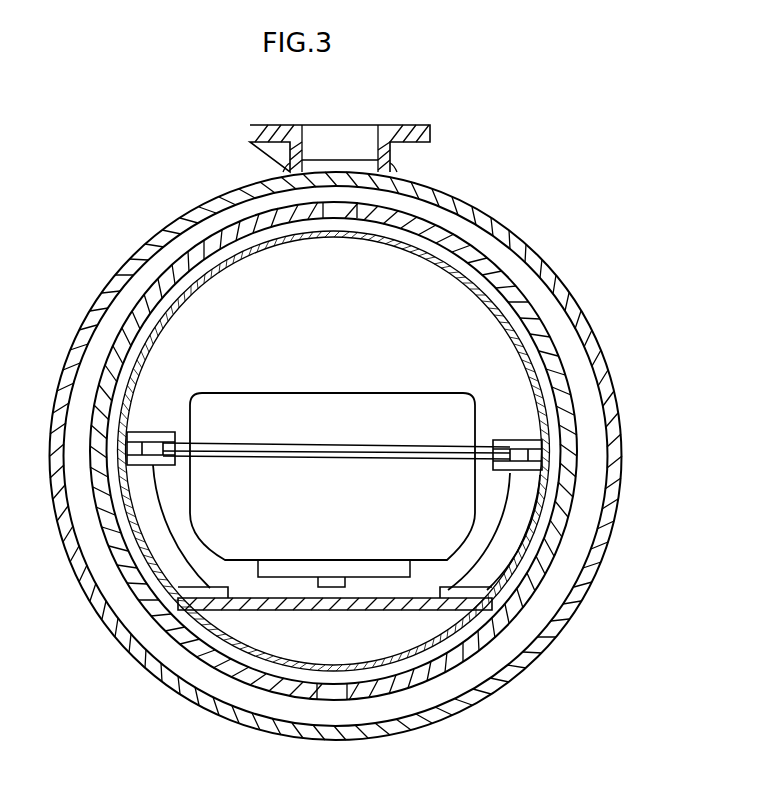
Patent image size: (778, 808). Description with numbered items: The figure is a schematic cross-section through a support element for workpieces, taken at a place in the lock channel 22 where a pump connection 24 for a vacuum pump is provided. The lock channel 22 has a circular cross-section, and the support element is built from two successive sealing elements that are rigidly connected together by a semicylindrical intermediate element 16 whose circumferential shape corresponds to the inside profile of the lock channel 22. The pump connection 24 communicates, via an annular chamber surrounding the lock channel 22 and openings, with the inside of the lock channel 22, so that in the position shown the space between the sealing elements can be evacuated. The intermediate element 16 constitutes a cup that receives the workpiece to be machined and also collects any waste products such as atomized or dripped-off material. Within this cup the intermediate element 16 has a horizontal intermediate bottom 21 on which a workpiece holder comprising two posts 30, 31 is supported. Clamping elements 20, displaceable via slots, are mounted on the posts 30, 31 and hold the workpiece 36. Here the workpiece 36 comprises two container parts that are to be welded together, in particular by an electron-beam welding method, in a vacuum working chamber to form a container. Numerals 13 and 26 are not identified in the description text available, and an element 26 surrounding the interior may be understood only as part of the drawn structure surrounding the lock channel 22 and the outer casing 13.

The outer shell 13 is at (586, 312).
The semicylindrical intermediate element 16 is at (570, 378).
The clamping elements 20 is at (525, 472).
The horizontal intermediate bottom 21 is at (432, 618).
The lock channel 22 is at (452, 668).
The pump connection 24 is at (332, 150).
The inner shell 26 is at (493, 237).
The post 30 is at (152, 505).
The post 31 is at (503, 553).
The workpiece 36 is at (222, 530).